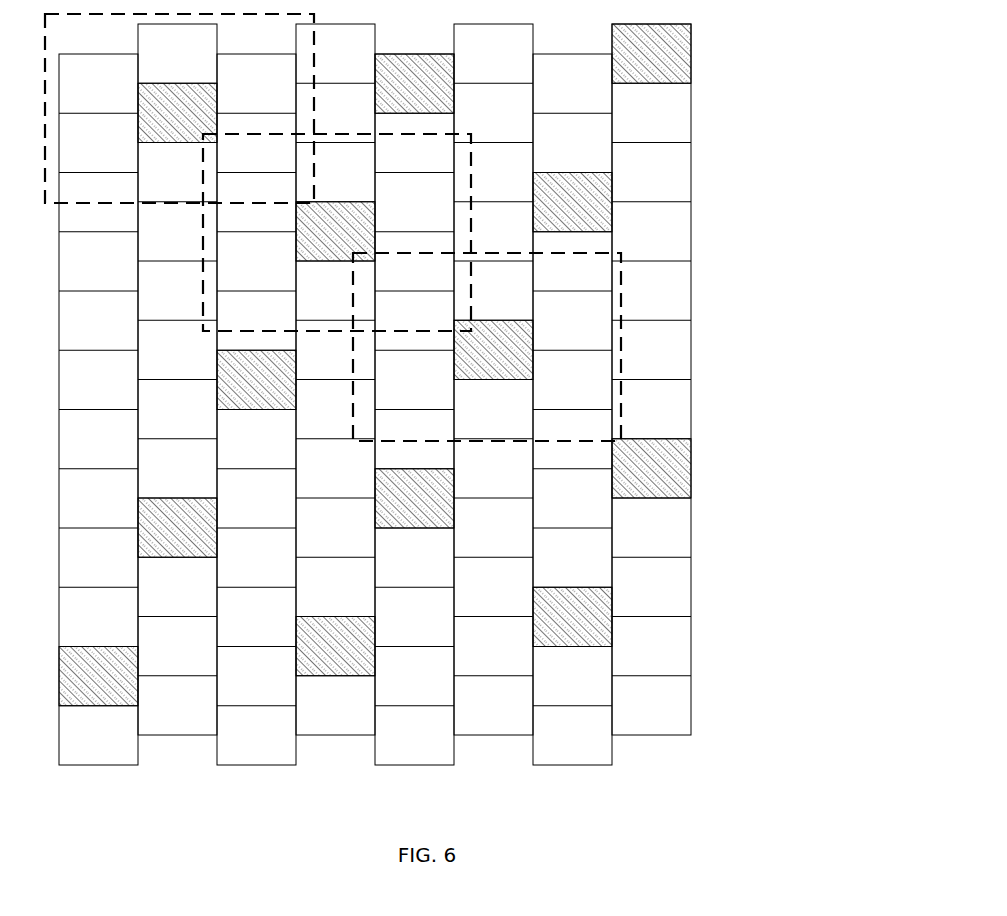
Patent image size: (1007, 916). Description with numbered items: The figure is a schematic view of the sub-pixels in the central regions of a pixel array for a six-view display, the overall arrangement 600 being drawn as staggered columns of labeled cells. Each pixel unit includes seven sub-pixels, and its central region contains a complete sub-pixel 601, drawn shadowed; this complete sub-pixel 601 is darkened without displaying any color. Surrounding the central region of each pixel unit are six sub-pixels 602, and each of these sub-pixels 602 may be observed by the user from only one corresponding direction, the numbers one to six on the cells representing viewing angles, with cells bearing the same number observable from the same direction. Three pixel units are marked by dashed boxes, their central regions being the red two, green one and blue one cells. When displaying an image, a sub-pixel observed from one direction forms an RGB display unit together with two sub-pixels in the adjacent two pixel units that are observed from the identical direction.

The pixel arrangement (display panel sub-pixel array, not labeled on sheet) 600 is at (428, 389).
The complete sub-pixel 601 is at (691, 53).
The sub-pixels surrounding the central region 602 is at (690, 172).